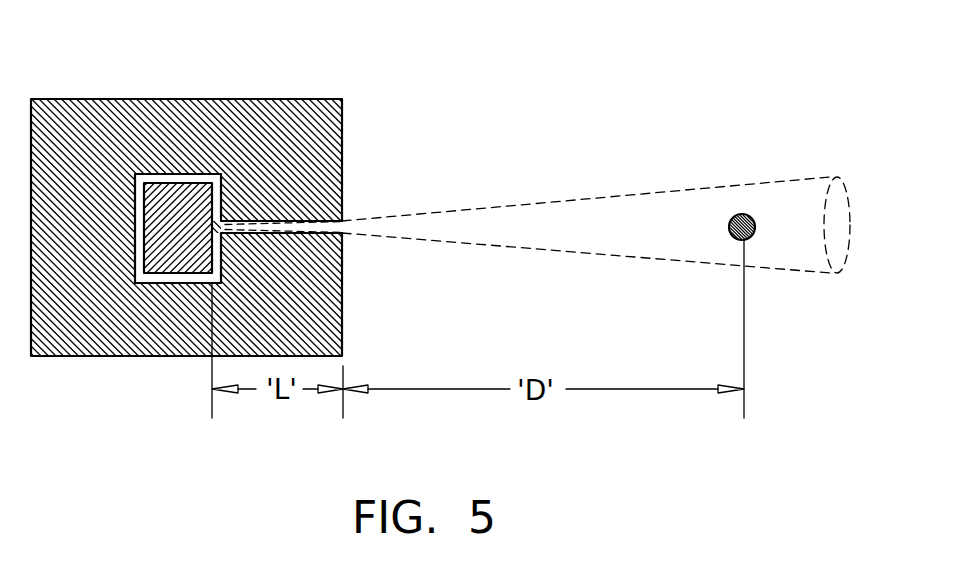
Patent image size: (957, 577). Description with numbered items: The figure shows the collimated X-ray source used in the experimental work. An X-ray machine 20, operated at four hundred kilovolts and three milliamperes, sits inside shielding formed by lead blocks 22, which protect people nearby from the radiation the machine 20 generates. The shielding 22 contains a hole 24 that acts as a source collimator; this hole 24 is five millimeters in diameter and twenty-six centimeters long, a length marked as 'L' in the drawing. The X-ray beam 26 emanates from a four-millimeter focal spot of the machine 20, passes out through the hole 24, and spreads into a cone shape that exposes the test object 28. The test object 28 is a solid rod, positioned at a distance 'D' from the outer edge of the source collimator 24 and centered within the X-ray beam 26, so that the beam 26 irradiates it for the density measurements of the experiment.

The X-ray machine 20 is at (177, 183).
The lead blocks 22 is at (295, 99).
The hole 24 is at (407, 164).
The X-ray beam 26 is at (646, 192).
The test object 28 is at (748, 213).